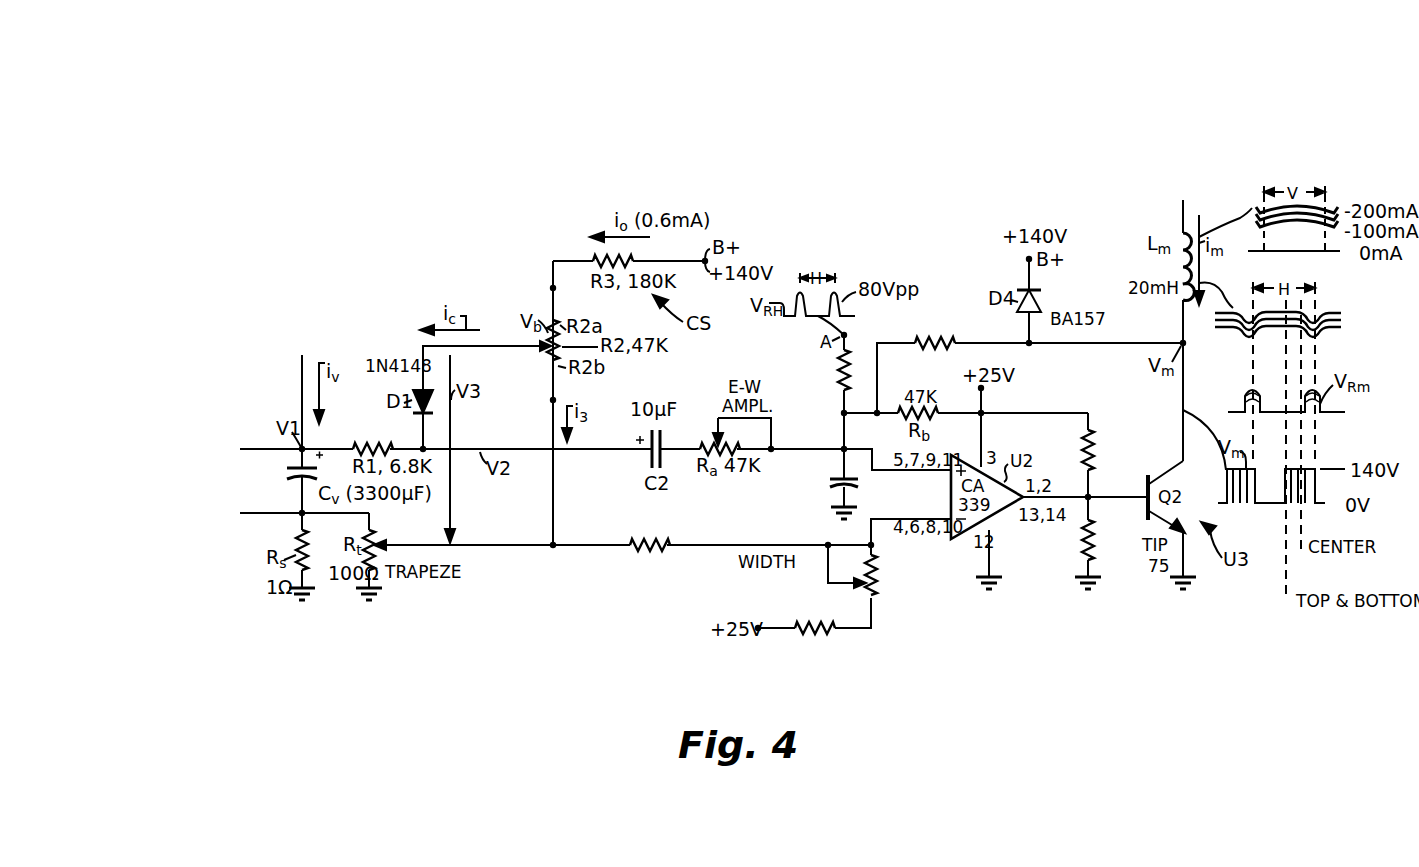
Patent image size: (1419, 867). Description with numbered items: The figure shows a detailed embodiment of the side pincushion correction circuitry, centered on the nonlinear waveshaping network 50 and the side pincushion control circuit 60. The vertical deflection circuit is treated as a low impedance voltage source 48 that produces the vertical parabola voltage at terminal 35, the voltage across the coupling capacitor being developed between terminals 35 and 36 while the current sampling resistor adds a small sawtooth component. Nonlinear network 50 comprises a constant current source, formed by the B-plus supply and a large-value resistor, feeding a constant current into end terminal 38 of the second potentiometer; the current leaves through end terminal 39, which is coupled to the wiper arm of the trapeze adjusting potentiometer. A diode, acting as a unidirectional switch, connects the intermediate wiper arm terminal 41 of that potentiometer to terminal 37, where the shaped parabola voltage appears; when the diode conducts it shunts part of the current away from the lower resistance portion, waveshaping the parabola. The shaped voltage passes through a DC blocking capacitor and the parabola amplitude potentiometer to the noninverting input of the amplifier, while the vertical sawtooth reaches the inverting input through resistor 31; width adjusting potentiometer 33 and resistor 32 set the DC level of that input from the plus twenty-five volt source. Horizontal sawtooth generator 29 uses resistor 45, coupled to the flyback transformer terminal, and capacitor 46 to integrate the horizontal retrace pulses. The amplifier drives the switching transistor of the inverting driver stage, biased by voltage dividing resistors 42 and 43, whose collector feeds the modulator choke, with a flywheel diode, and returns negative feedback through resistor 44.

The horizontal sawtooth generator 29 is at (841, 447).
The resistor 31 is at (652, 538).
The resistor 32 is at (808, 621).
The width adjusting potentiometer 33 is at (880, 562).
The terminal 35 is at (304, 448).
The terminal 36 is at (300, 516).
The terminal 37 is at (425, 447).
The end terminal 38 is at (551, 288).
The end terminal 39 is at (551, 400).
The intermediate wiper arm terminal 41 is at (547, 356).
The voltage dividing resistor 42 is at (1091, 448).
The voltage dividing resistor 43 is at (1091, 533).
The resistor 44 is at (937, 352).
The resistor 45 is at (838, 392).
The capacitor 46 is at (832, 481).
The low impedance voltage source 48 is at (284, 492).
The nonlinear waveshaping network 50 is at (486, 281).
The side pincushion control circuit 60 is at (1051, 611).